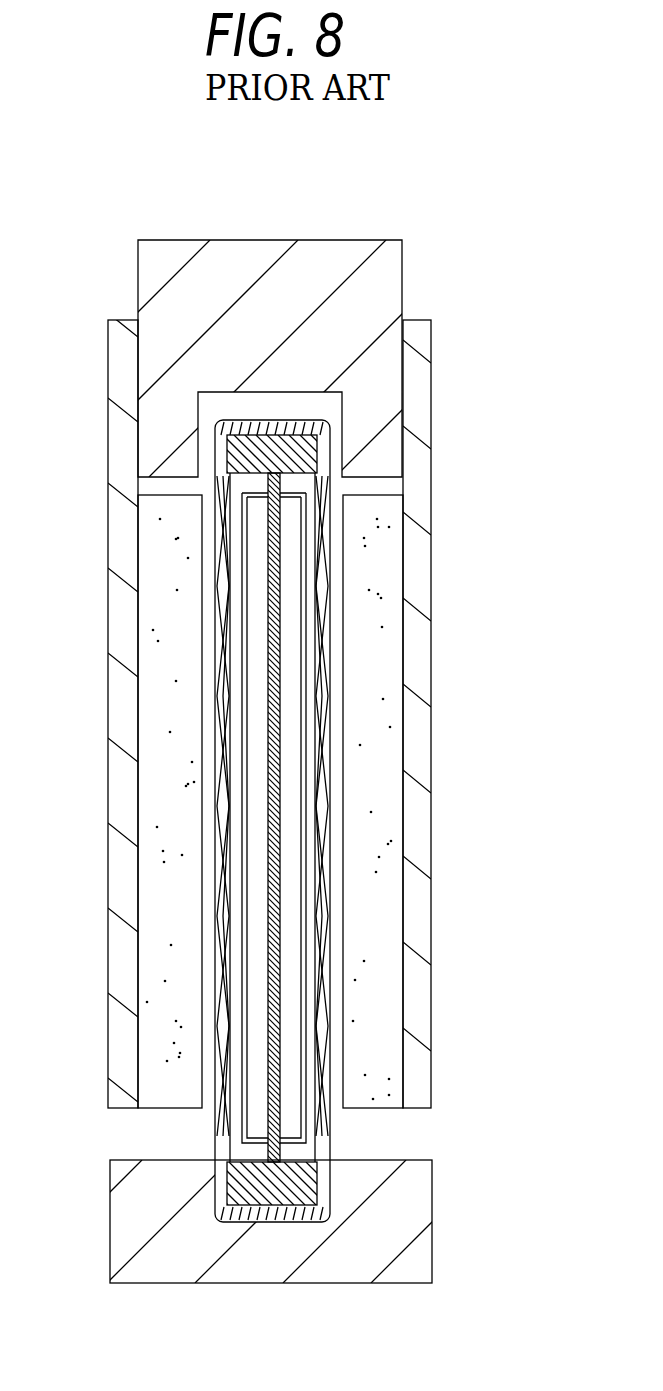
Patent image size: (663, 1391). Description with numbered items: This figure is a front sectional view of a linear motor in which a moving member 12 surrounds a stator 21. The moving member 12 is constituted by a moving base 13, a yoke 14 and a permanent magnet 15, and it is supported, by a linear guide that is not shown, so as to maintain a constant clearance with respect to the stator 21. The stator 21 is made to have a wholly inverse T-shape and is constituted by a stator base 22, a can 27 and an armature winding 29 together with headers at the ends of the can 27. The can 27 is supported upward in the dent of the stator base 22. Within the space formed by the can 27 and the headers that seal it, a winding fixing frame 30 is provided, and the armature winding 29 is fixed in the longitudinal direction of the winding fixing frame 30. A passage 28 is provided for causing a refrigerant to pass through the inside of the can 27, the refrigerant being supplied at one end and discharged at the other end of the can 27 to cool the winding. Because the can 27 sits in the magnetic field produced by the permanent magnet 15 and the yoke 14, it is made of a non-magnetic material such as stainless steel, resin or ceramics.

The moving member 12 is at (286, 321).
The moving base 13 is at (345, 240).
The yoke 14 is at (415, 993).
The permanent magnet 15 is at (395, 799).
The stator 21 is at (279, 1259).
The stator base 22 is at (330, 1285).
The can 27 is at (217, 803).
The passage 28 is at (230, 560).
The armature winding 29 is at (300, 653).
The winding fixing frame 30 is at (283, 562).